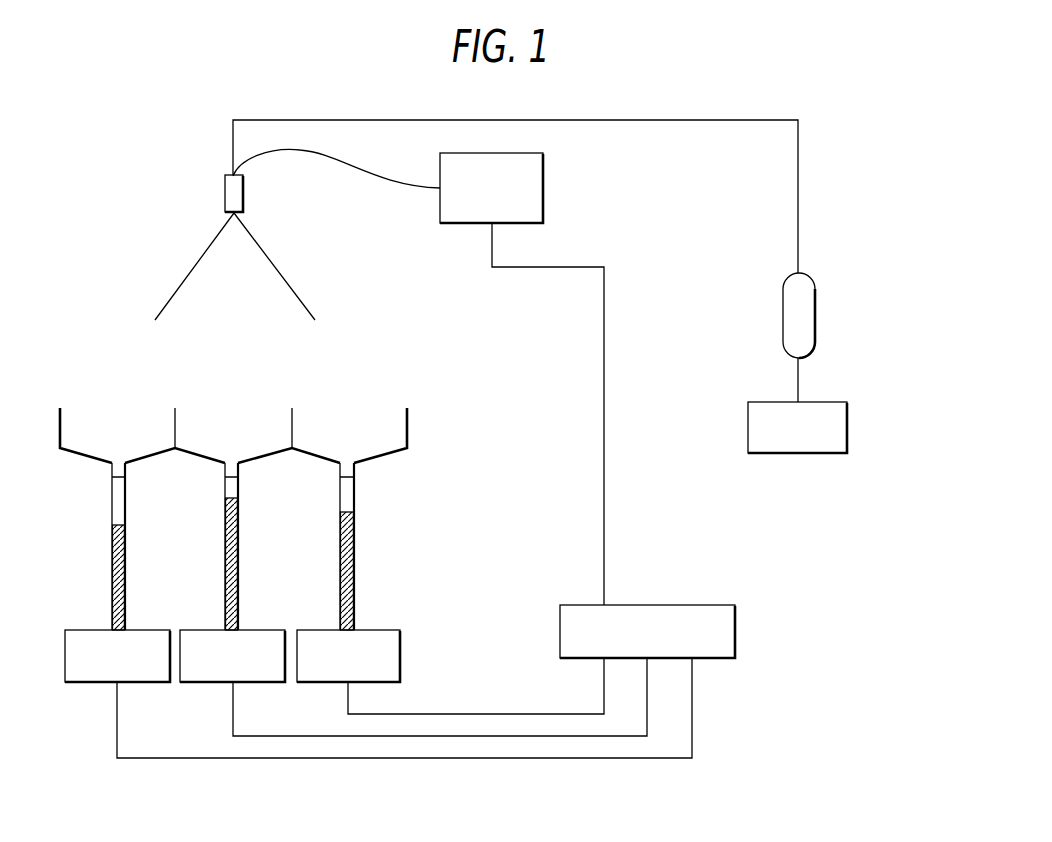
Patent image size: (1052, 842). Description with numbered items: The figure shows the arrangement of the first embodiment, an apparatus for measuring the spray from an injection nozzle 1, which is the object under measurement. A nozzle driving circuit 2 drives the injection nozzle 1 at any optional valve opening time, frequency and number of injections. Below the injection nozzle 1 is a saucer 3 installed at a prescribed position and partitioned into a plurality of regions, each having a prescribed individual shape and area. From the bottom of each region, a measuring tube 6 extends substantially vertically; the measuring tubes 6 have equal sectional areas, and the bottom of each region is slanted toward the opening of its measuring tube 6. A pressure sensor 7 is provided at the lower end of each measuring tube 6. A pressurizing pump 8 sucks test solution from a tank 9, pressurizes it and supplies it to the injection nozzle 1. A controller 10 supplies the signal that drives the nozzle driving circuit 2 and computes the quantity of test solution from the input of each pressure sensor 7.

The injection nozzle 1 is at (245, 195).
The nozzle driving circuit 2 is at (545, 188).
The saucer 3 is at (409, 430).
The measuring tubes 6 is at (356, 548).
The pressure sensor 7 is at (401, 657).
The pressurizing pump 8 is at (816, 318).
The tank 9 is at (848, 428).
The controller 10 is at (737, 632).